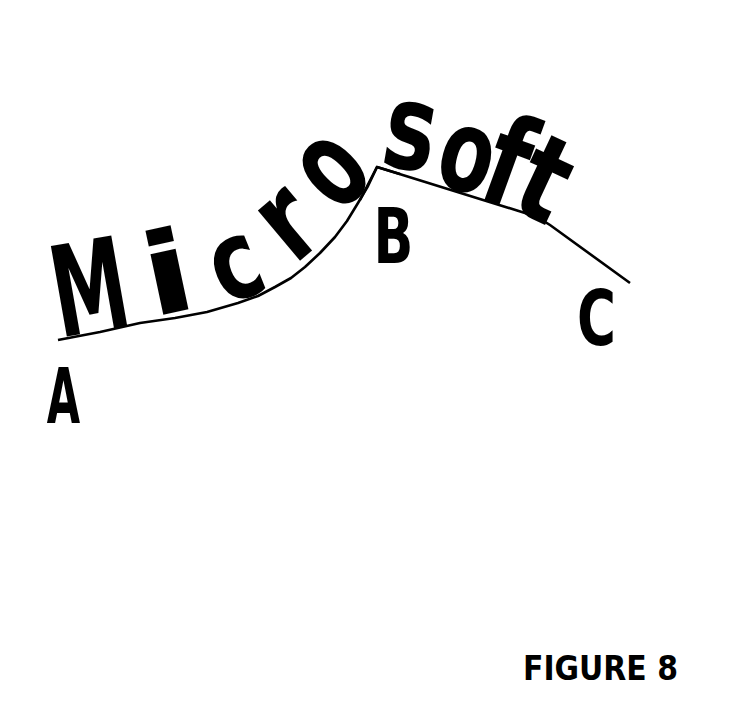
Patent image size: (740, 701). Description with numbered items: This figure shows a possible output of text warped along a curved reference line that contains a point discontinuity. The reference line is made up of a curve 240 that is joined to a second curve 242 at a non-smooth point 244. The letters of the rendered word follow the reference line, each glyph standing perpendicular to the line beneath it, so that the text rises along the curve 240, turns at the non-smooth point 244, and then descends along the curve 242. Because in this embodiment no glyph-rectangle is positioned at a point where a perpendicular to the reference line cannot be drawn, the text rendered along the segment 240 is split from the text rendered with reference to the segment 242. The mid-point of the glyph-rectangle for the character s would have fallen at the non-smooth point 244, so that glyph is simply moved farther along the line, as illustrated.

The curve 240 is at (222, 313).
The curve 242 is at (558, 246).
The non-smooth point 244 is at (372, 147).